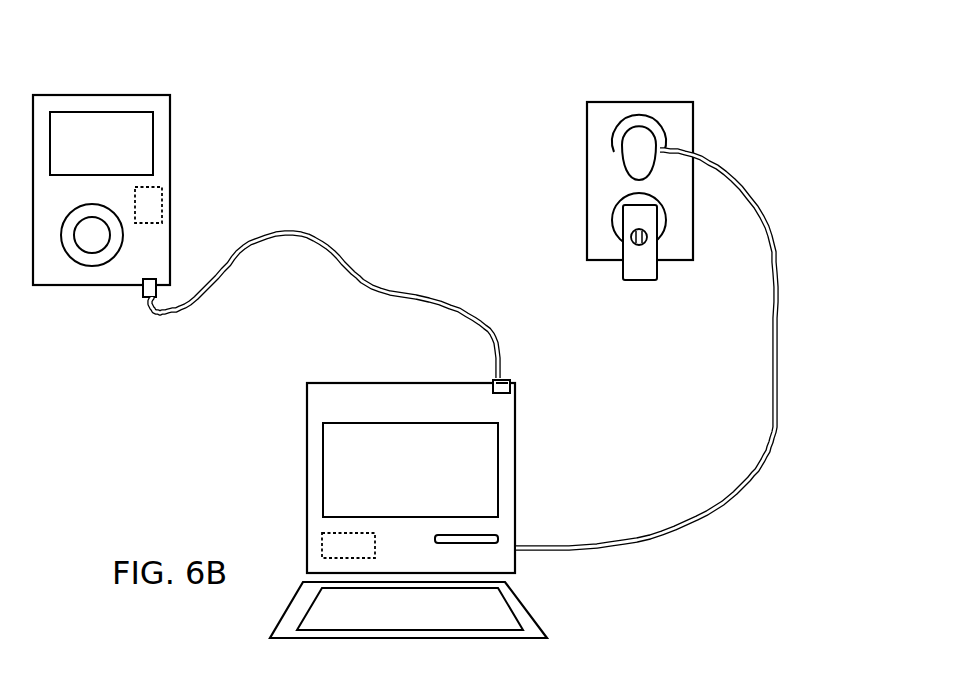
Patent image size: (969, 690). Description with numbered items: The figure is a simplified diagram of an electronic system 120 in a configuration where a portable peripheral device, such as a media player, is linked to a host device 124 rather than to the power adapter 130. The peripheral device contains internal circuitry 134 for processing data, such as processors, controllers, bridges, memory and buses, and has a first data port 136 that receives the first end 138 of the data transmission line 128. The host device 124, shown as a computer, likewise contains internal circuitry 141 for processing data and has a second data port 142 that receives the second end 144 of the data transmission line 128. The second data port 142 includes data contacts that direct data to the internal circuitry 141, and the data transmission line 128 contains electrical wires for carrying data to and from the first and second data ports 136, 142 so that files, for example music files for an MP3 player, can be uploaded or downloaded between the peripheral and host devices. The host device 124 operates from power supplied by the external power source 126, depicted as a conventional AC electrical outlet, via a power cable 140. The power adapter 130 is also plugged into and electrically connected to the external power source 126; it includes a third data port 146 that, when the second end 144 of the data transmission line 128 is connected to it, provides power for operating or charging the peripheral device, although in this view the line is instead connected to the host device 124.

The electronic system 120 is at (307, 82).
The host device 124 is at (515, 527).
The external power source 126 is at (673, 125).
The data transmission line 128 is at (420, 297).
The power adapter 130 is at (635, 212).
The internal circuitry 134 is at (150, 207).
The first data port 136 is at (142, 284).
The first end 138 is at (148, 297).
The power cable 140 is at (770, 393).
The internal circuitry 141 is at (332, 543).
The second data port 142 is at (517, 392).
The second end 144 is at (513, 378).
The third data port 146 is at (630, 240).